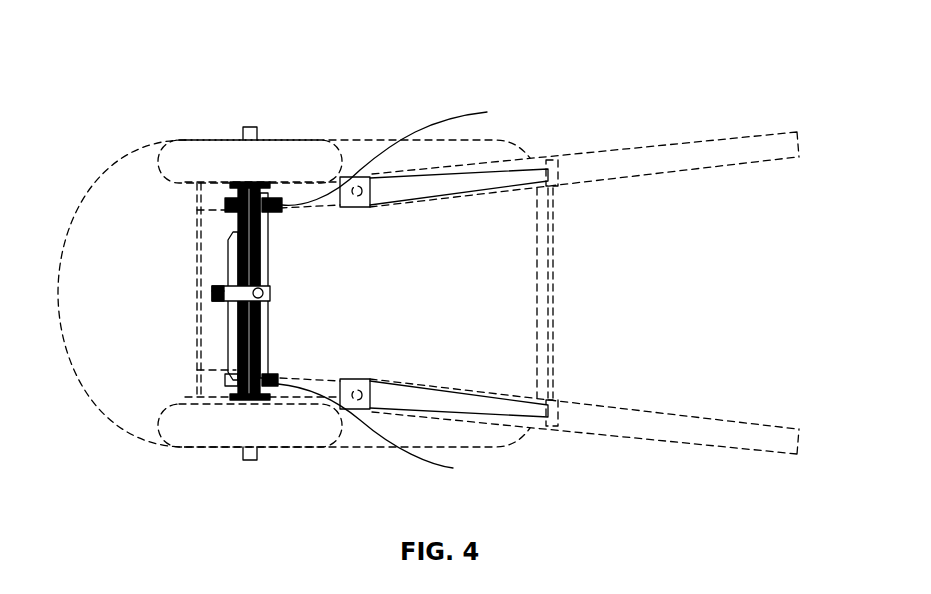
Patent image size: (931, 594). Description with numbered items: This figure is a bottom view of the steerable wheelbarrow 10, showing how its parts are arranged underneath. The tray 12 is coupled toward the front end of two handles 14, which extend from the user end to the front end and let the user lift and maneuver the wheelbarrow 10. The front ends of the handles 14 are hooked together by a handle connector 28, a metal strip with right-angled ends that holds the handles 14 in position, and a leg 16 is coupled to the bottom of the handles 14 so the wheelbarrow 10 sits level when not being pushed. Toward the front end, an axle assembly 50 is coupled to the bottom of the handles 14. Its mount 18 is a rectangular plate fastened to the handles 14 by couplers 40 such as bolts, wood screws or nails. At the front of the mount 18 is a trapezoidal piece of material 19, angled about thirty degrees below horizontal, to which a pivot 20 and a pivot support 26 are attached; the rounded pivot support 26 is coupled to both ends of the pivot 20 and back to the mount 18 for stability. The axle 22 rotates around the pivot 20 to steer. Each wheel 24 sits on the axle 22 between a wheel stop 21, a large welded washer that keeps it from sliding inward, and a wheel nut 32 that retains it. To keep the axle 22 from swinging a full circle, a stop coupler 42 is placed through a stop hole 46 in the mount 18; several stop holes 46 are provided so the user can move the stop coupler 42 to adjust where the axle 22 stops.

The steerable wheelbarrow 10 is at (147, 60).
The tray 12 is at (82, 372).
The handle 14 is at (750, 151).
The leg 16 is at (538, 158).
The mount 18 is at (266, 292).
The trapezoidal piece of material 19 is at (230, 342).
The pivot 20 is at (280, 290).
The wheel stop 21 is at (262, 183).
The axle 22 is at (260, 182).
The wheel 24 is at (193, 148).
The pivot support 26 is at (214, 297).
The handle connector 28 is at (197, 224).
The wheel nut 32 is at (250, 126).
The coupler 40 is at (262, 286).
The stop coupler 42 is at (268, 211).
The stop hole 46 is at (396, 290).
The axle assembly 50 is at (212, 293).